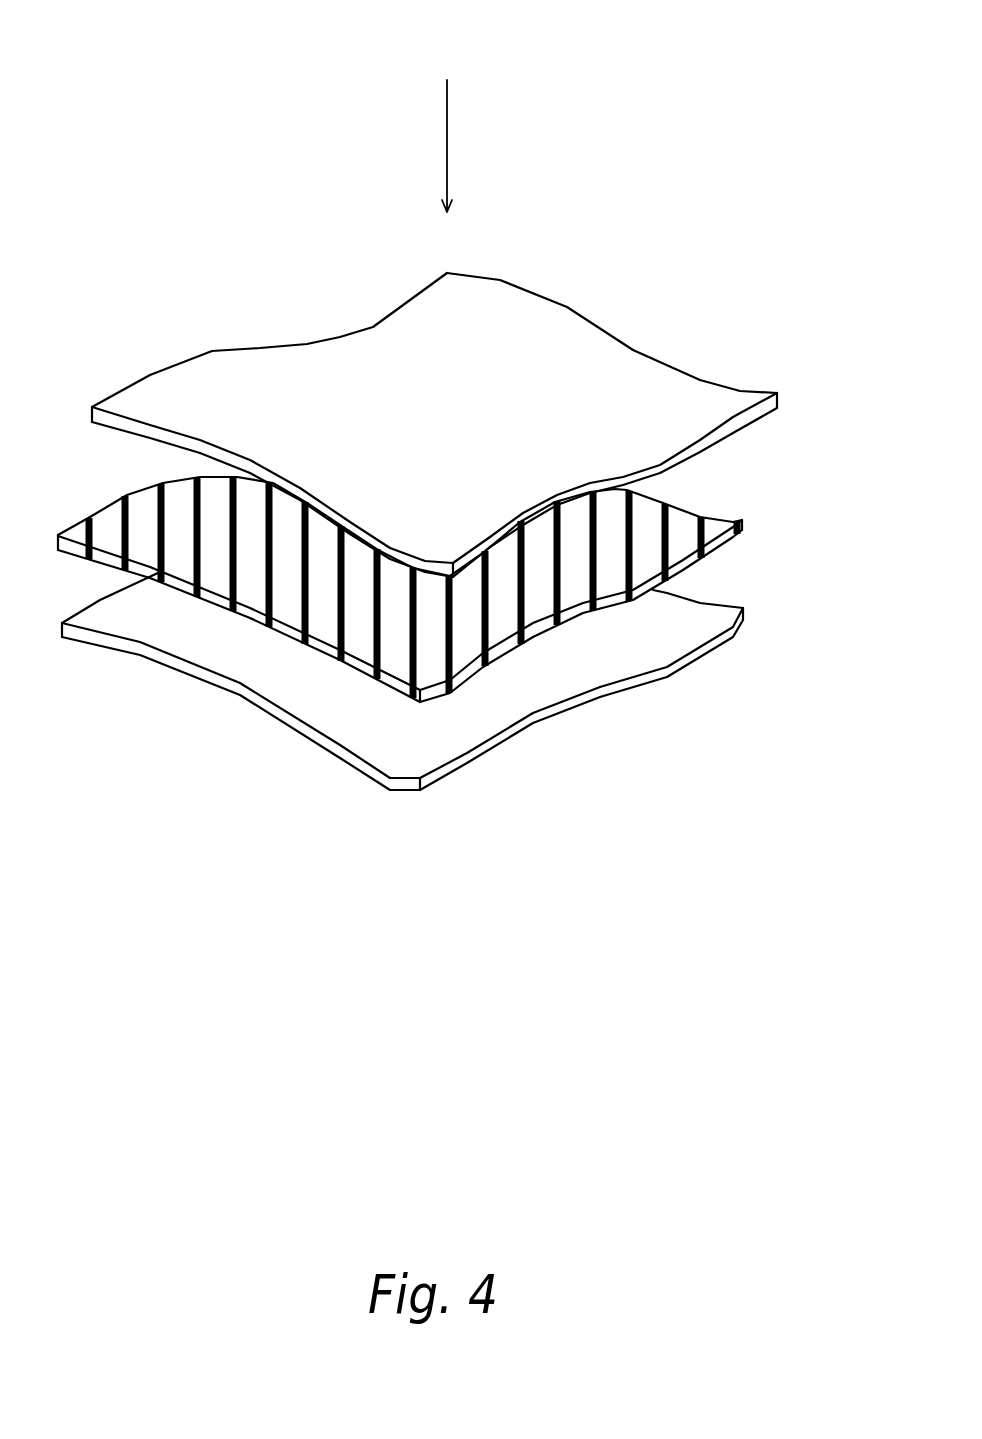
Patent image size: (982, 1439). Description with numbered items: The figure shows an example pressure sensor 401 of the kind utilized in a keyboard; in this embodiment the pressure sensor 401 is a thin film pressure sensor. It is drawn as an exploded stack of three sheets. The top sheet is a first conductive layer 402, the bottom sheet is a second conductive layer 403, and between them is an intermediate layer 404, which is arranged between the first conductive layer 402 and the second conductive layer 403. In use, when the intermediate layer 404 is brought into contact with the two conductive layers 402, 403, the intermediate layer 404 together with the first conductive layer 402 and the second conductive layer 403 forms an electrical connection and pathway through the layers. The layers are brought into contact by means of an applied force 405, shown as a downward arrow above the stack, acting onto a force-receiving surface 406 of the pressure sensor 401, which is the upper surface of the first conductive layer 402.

The pressure sensor 401 is at (183, 153).
The first conductive layer 402 is at (707, 433).
The second conductive layer 403 is at (707, 623).
The intermediate layer 404 is at (703, 532).
The applied force 405 is at (447, 145).
The force-receiving surface 406 is at (193, 372).